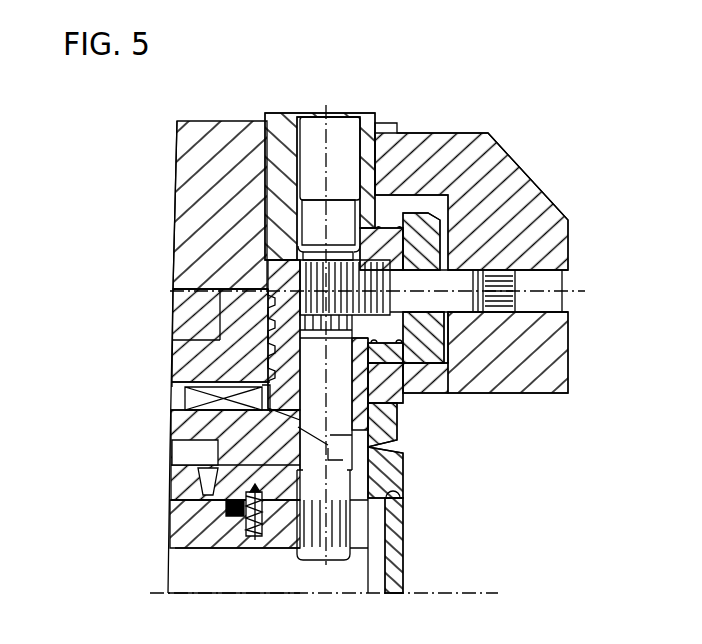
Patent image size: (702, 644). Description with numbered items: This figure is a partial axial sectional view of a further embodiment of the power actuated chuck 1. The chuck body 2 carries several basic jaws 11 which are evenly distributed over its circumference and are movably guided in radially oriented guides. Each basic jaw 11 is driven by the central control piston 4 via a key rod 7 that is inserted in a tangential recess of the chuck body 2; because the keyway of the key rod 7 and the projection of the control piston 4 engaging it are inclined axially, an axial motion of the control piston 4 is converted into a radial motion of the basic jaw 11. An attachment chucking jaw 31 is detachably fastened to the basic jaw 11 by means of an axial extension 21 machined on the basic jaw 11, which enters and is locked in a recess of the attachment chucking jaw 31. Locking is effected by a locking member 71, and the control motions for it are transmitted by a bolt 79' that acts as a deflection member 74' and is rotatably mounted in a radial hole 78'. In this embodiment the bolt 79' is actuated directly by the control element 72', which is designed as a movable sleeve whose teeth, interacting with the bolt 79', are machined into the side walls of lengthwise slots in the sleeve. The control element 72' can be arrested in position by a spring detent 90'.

The power actuated chuck 1 is at (495, 519).
The chuck body 2 is at (228, 148).
The control piston 4 is at (205, 428).
The key rod 7 is at (205, 360).
The basic jaw 11 is at (290, 135).
The axial extension 21 is at (412, 204).
The attachment chucking jaw 31 is at (514, 195).
The locking member 71 is at (497, 322).
The control element 72' is at (423, 542).
The deflection member 74' is at (363, 426).
The radial hole 78' is at (406, 451).
The bolt 79' is at (434, 357).
The spring detent 90' is at (175, 512).